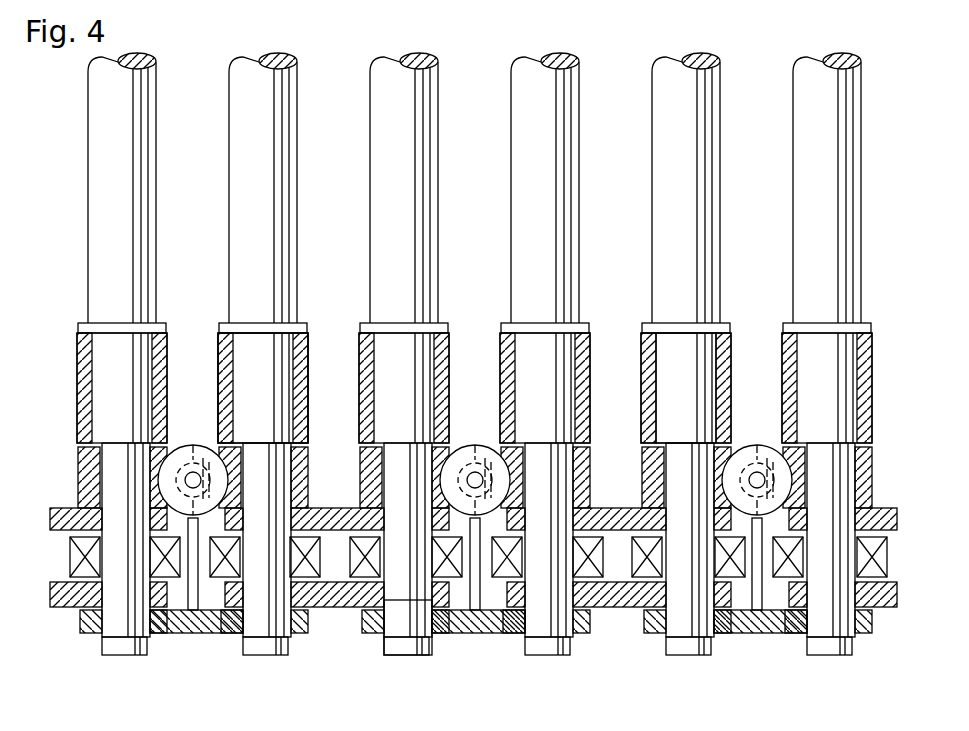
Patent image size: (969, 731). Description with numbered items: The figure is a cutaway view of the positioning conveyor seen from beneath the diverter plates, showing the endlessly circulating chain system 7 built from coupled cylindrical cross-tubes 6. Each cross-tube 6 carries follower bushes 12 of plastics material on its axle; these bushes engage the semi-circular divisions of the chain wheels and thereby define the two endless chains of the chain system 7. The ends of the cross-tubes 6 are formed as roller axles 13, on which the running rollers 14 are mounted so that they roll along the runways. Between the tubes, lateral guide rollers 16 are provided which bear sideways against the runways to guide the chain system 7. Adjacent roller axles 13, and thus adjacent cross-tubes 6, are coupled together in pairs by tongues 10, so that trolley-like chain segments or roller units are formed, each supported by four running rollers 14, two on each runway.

The cylindrical tube 6 is at (384, 208).
The chain system 7 is at (681, 380).
The tongue 10 is at (215, 622).
The follower bush 12 is at (220, 378).
The roller axle 13 is at (401, 622).
The running roller 14 is at (356, 580).
The lateral guide roller 16 is at (195, 445).